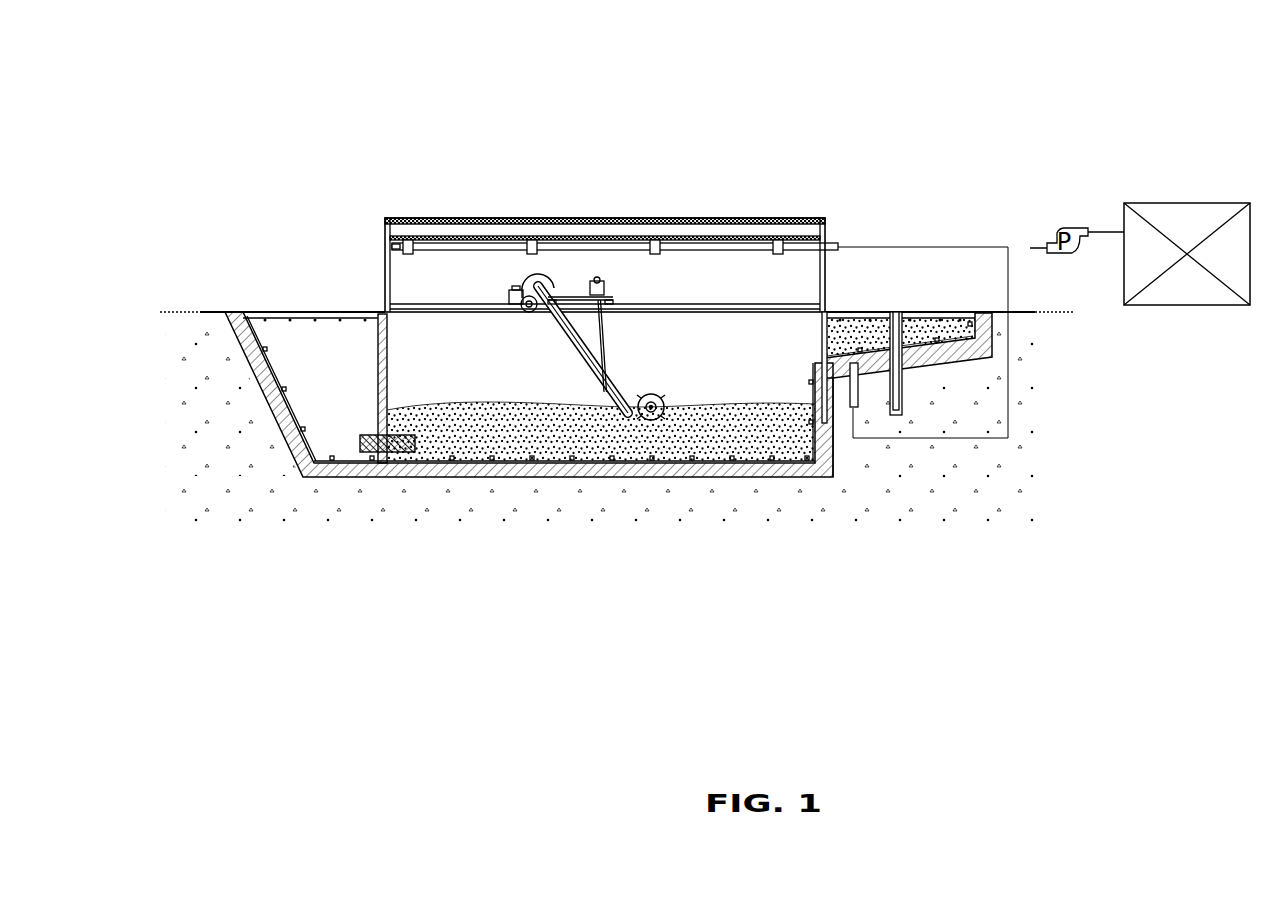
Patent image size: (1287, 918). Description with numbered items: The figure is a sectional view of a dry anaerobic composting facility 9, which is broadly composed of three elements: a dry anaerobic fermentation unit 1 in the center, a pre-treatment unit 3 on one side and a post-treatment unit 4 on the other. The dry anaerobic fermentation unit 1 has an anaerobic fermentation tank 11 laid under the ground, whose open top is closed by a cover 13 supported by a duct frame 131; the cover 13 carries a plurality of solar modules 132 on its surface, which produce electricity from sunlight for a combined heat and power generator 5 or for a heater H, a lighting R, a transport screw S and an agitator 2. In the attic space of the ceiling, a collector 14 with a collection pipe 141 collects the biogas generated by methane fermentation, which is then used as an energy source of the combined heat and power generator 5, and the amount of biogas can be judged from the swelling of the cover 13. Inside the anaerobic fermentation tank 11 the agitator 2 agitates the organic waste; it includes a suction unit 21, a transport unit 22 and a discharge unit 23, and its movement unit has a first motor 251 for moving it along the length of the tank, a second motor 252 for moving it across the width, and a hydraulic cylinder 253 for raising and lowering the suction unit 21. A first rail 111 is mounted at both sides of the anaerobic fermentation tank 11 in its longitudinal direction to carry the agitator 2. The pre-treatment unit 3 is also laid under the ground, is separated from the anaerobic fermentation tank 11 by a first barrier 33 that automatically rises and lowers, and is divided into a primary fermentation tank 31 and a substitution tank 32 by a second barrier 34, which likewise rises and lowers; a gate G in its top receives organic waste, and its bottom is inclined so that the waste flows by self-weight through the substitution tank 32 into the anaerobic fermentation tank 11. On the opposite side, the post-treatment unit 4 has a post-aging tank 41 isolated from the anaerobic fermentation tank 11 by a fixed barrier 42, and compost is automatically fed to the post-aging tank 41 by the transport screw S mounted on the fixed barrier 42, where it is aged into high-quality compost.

The dry anaerobic composting facility 9 is at (443, 78).
The dry anaerobic fermentation unit 1 is at (615, 221).
The collector 14 is at (430, 238).
The collection pipe 141 is at (630, 250).
The duct frame 131 is at (716, 232).
The solar modules 132 is at (560, 219).
The cover 13 is at (823, 267).
The first rail 111 is at (403, 305).
The agitator 2 is at (658, 309).
The suction unit 21 is at (678, 393).
The transport unit 22 is at (573, 350).
The discharge unit 23 is at (512, 327).
The first motor 251 is at (514, 297).
The second motor 252 is at (610, 287).
The hydraulic cylinder 253 is at (604, 342).
The pre-treatment unit 3 is at (908, 381).
The primary fermentation tank 31 is at (962, 328).
The substitution tank 32 is at (853, 408).
The first barrier 33 is at (820, 355).
The second barrier 34 is at (920, 362).
The post-treatment unit 4 is at (603, 381).
The post-aging tank 41 is at (305, 390).
The fixed barrier 42 is at (375, 410).
The combined heat and power generator 5 is at (1186, 203).
The anaerobic fermentation tank 11 is at (708, 442).
The gate G is at (294, 312).
The lighting R is at (262, 315).
The heater H is at (285, 445).
The transport screw S is at (390, 447).